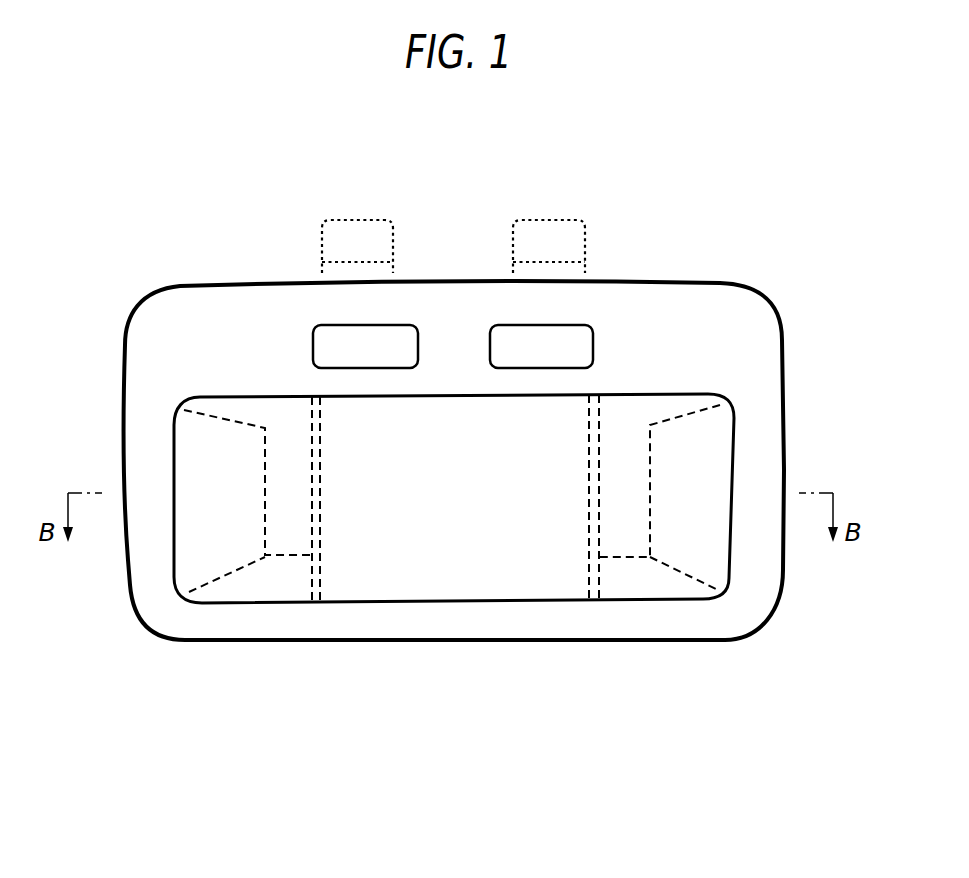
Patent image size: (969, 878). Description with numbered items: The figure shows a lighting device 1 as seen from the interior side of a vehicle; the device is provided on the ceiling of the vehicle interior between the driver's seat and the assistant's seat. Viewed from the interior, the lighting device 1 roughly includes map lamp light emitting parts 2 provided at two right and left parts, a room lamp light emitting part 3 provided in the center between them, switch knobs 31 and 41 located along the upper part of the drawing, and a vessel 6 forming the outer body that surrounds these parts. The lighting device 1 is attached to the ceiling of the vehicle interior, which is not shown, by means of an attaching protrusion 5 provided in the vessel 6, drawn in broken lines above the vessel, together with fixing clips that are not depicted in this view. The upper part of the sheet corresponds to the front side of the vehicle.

The lighting device 1 is at (465, 435).
The map lamp light emitting part 2 is at (277, 528).
The room lamp light emitting part 3 is at (502, 588).
The attaching protrusion 5 is at (348, 237).
The vessel 6 is at (783, 396).
The switch knob 31 is at (575, 332).
The switch knob 41 is at (390, 333).